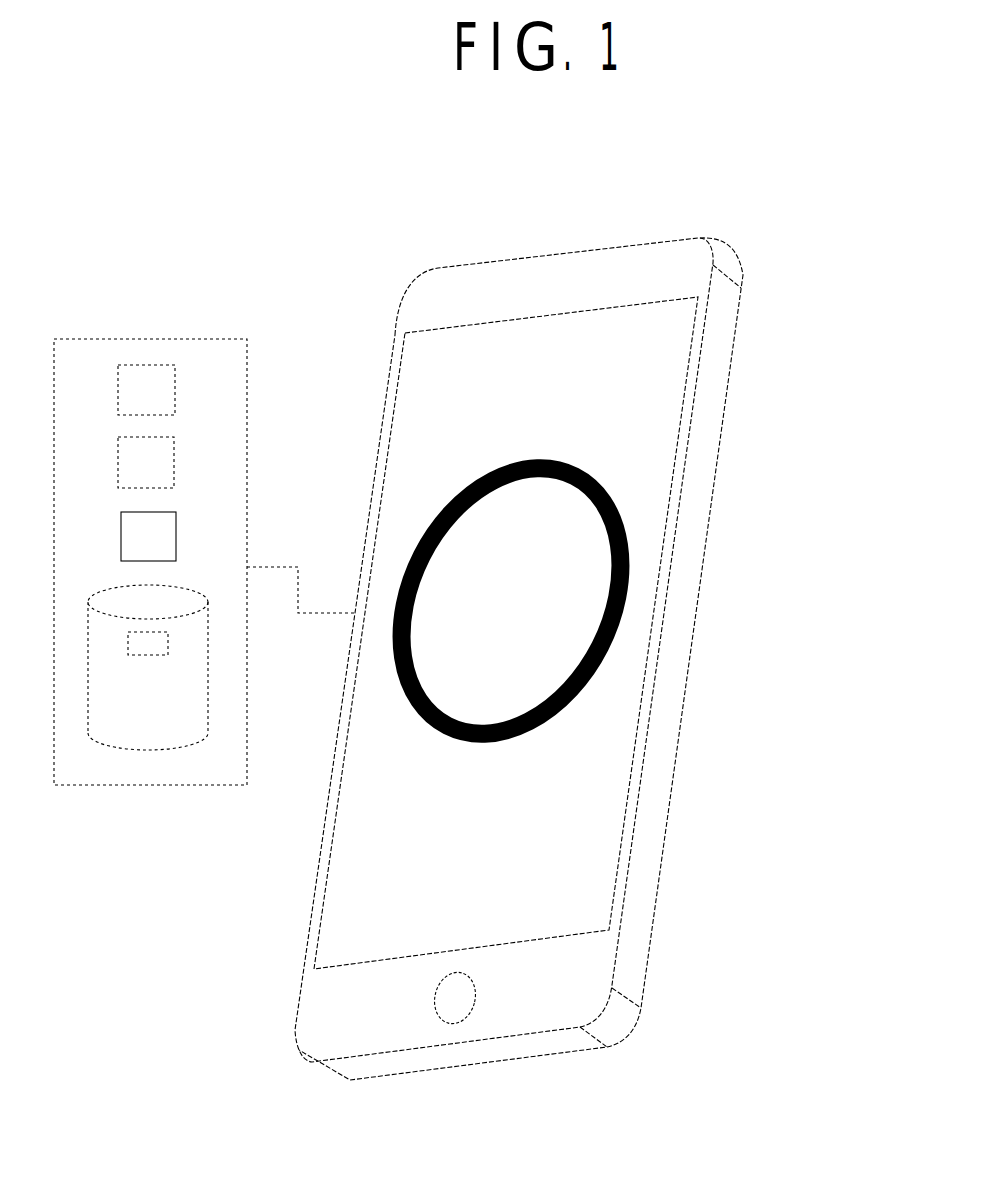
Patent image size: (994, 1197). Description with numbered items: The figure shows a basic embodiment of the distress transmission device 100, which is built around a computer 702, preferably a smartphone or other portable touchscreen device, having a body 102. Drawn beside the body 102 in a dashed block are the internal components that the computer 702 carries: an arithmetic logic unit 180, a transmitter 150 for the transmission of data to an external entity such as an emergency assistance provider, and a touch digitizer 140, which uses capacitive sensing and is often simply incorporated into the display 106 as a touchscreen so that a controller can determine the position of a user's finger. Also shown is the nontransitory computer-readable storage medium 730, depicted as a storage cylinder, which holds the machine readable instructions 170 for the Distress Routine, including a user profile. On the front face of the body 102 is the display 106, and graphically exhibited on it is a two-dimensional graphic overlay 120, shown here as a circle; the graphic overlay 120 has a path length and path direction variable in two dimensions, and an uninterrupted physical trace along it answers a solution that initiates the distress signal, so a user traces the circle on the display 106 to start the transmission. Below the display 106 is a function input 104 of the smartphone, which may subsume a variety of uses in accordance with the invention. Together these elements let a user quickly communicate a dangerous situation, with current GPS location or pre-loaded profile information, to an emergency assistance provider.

The distress transmission device 100 is at (354, 159).
The body 102 is at (561, 670).
The computer 702 is at (511, 243).
The display 106 is at (627, 677).
The graphic overlay 120 is at (617, 506).
The function input 104 is at (465, 1003).
The arithmetic logic unit 180 is at (146, 390).
The transmitter 150 is at (146, 462).
The touch digitizer 140 is at (148, 536).
The machine readable instructions 170 is at (148, 643).
The nontransitory computer-readable storage medium 730 is at (148, 667).